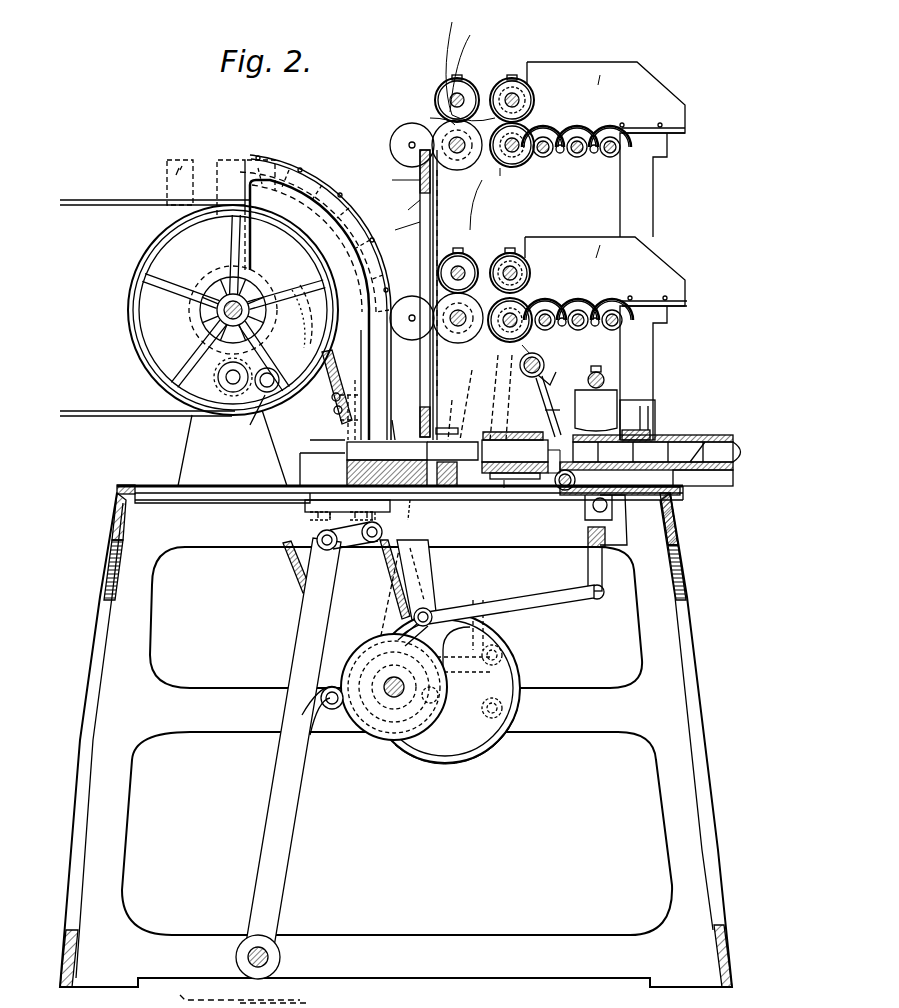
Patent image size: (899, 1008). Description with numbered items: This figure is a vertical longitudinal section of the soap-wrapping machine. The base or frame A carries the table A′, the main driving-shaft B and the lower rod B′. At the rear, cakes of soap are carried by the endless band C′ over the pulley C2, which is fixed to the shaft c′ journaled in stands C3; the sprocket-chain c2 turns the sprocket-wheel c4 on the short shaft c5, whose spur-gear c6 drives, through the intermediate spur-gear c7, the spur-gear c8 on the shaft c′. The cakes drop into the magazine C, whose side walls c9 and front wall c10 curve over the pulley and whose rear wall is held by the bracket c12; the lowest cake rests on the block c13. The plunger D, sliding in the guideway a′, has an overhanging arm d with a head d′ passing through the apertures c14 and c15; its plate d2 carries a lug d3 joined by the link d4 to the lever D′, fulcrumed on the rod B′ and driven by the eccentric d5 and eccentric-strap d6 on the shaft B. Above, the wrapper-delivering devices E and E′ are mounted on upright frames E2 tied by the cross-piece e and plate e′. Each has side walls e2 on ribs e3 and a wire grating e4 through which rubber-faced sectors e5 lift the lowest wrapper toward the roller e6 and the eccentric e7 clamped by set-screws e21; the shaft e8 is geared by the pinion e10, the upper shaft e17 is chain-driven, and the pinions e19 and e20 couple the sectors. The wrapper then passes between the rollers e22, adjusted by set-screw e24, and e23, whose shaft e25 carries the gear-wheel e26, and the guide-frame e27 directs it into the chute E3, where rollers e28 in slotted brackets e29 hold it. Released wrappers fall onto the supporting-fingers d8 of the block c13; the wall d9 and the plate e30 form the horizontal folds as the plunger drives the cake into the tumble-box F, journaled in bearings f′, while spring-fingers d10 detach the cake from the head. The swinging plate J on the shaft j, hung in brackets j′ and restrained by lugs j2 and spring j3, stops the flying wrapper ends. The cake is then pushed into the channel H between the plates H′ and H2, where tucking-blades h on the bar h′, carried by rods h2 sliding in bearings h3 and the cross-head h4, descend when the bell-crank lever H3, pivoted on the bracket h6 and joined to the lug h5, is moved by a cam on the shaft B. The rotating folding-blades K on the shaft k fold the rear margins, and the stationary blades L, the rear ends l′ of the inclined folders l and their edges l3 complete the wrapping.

The base or frame A is at (65, 738).
The top or table A′ is at (117, 489).
The slot or guideway a′ is at (165, 500).
The main driving-shaft B is at (396, 700).
The rod B′ is at (280, 957).
The magazine or receptacle C is at (296, 200).
The endless band or apron C′ is at (85, 208).
The pulley C2 is at (130, 318).
The stands C3 is at (182, 456).
The shaft c′ is at (244, 306).
The sprocket-chain c2 is at (294, 568).
The sprocket-wheel c4 is at (290, 330).
The short shaft c5 is at (266, 398).
The spur-gear c6 is at (274, 370).
The intermediate spur-gear c7 is at (230, 382).
The spur-gear c8 is at (215, 352).
The side walls c9 is at (255, 170).
The front wall c10 is at (328, 192).
The bracket c12 is at (338, 405).
The block c13 is at (338, 465).
The aperture c14 is at (335, 440).
The aperture c15 is at (398, 430).
The plunger D is at (300, 483).
The lever D′ is at (284, 748).
The overhanging arm or bar d is at (404, 428).
The head d′ is at (452, 464).
The plate d2 is at (305, 508).
The depending lug d3 is at (385, 527).
The link d4 is at (350, 548).
The eccentric d5 is at (445, 681).
The eccentric-strap d6 is at (448, 766).
The supporting-fingers d8 is at (428, 512).
The wall of slot d9 is at (458, 500).
The spring-fingers d10 is at (476, 405).
The wrapper-delivering device E is at (569, 338).
The wrapper-delivering device E′ is at (508, 78).
The upright frames E2 is at (654, 210).
The chute E3 is at (420, 262).
The cross-piece e is at (640, 400).
The plate e′ is at (420, 183).
The side walls e2 is at (586, 250).
The horizontal ribs e3 is at (686, 130).
The wire grating e4 is at (643, 197).
The rubber-faced sectors e5 is at (580, 130).
The rubber-faced roller e6 is at (508, 166).
The rubber feed eccentric e7 is at (526, 92).
The shaft e8 is at (518, 308).
The pinion e10 is at (488, 205).
The upper shaft e17 is at (520, 140).
The pinions e19 is at (548, 154).
The pinions e20 is at (594, 155).
The set-screws e21 is at (515, 72).
The roller e22 is at (448, 88).
The roller e23 is at (440, 122).
The set-screw e24 is at (460, 70).
The shaft e25 is at (458, 150).
The gear-wheel e26 is at (440, 135).
The guide-frame e27 is at (440, 298).
The rollers e28 is at (400, 136).
The slotted brackets e29 is at (420, 200).
The plate e30 is at (438, 210).
The tumble-box F is at (515, 459).
The bearings f′ is at (512, 500).
The channel-way H is at (540, 412).
The plate H′ is at (700, 488).
The plate H2 is at (653, 436).
The bell-crank lever H3 is at (518, 610).
The tucking-blades h is at (596, 410).
The lateral bar h′ is at (604, 376).
The vertical rods h2 is at (580, 530).
The bearings h3 is at (608, 508).
The cross-head h4 is at (588, 560).
The lug h5 is at (604, 588).
The bracket h6 is at (436, 572).
The plate J is at (513, 423).
The shaft j is at (520, 366).
The brackets j′ is at (520, 343).
The lugs j2 is at (526, 380).
The spiral spring j3 is at (548, 404).
The folding-blades K is at (606, 534).
The shaft k is at (552, 476).
The stationary folding-blades L is at (628, 520).
The upwardly-inclined folders l is at (746, 452).
The rear ends l′ is at (672, 505).
The upwardly-inclined edges l3 is at (700, 440).